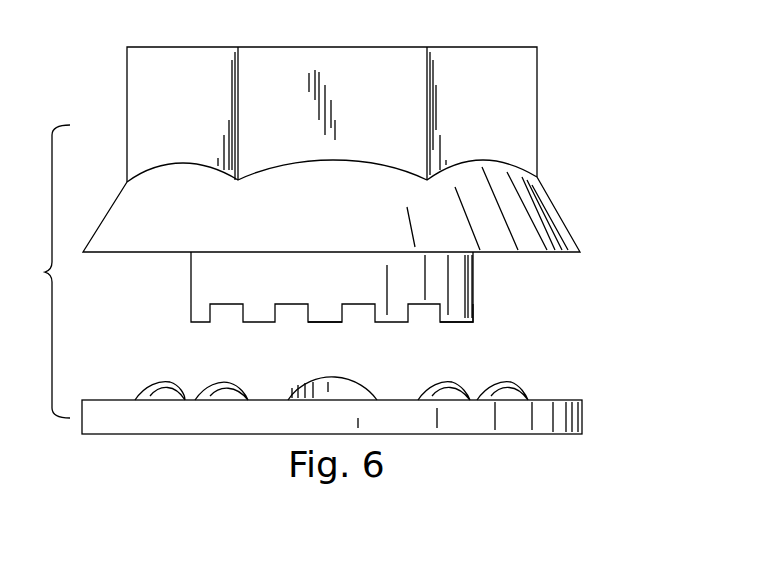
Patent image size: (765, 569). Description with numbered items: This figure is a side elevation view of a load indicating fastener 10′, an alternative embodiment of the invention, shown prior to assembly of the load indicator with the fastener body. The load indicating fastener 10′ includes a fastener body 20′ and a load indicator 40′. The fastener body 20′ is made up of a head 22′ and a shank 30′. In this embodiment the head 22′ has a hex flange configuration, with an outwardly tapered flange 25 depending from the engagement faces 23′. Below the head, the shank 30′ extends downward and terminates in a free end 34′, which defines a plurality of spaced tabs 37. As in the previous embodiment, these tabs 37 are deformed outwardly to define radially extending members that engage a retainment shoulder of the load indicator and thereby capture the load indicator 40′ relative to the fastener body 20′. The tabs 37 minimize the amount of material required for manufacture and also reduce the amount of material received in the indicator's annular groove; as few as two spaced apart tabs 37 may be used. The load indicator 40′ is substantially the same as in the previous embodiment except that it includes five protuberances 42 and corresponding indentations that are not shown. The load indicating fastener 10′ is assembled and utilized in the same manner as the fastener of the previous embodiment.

The load indicating fastener 10′ is at (603, 128).
The fastener body 20′ is at (537, 75).
The head 22′ is at (537, 153).
The engagement faces 23′ is at (197, 49).
The outwardly tapered flange 25 is at (558, 225).
The shank 30′ is at (475, 267).
The free end 34′ is at (473, 322).
The tabs 37 is at (333, 322).
The load indicator 40′ is at (584, 412).
The protuberances 42 is at (565, 378).